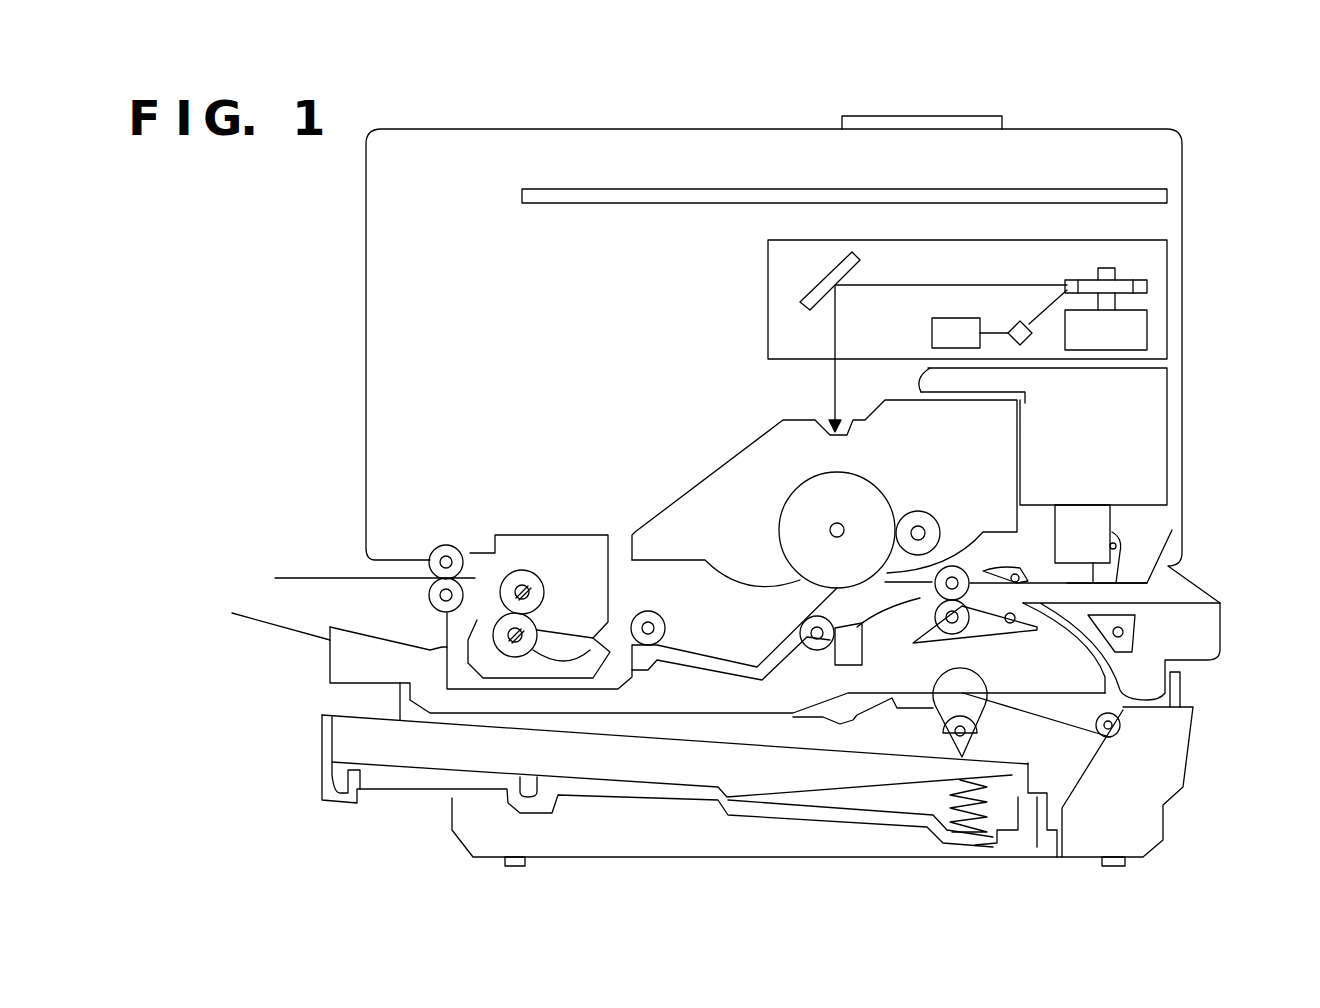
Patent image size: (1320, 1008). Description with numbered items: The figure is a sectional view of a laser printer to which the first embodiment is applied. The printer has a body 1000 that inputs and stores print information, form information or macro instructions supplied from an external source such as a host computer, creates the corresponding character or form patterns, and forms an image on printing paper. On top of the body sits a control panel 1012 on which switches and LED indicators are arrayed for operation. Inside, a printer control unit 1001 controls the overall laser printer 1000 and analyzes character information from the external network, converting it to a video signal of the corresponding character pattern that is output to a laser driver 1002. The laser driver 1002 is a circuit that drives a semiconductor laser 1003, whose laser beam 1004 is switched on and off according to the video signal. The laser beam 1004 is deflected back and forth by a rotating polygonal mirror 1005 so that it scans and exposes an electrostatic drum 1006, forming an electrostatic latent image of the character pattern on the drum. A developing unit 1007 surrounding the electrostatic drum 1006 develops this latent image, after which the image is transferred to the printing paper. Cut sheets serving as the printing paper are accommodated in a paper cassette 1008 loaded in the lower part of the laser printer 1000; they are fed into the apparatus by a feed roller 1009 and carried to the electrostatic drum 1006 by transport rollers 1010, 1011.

The laser printer body 1000 is at (1118, 132).
The printer control unit 1001 is at (1153, 192).
The laser driver 1002 is at (932, 333).
The semiconductor laser 1003 is at (1027, 342).
The laser beam 1004 is at (947, 285).
The rotating polygonal mirror 1005 is at (1147, 286).
The electrostatic drum 1006 is at (790, 500).
The developing unit 1007 is at (673, 500).
The paper cassette 1008 is at (318, 766).
The feed roller 1009 is at (933, 730).
The transport roller 1010 is at (1100, 733).
The transport roller 1011 is at (967, 630).
The control panel 1012 is at (975, 113).